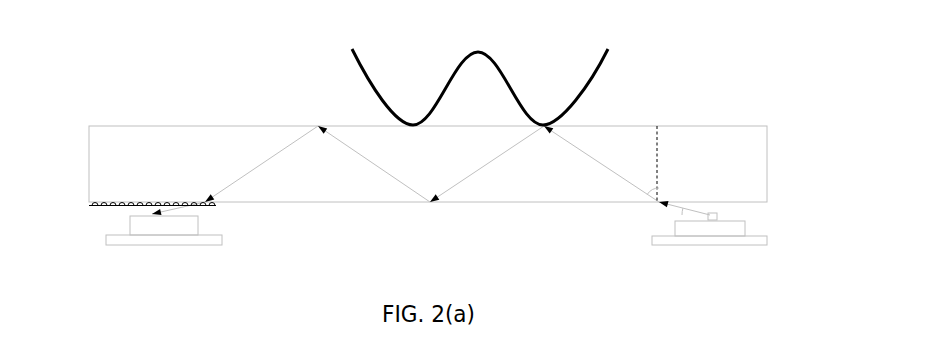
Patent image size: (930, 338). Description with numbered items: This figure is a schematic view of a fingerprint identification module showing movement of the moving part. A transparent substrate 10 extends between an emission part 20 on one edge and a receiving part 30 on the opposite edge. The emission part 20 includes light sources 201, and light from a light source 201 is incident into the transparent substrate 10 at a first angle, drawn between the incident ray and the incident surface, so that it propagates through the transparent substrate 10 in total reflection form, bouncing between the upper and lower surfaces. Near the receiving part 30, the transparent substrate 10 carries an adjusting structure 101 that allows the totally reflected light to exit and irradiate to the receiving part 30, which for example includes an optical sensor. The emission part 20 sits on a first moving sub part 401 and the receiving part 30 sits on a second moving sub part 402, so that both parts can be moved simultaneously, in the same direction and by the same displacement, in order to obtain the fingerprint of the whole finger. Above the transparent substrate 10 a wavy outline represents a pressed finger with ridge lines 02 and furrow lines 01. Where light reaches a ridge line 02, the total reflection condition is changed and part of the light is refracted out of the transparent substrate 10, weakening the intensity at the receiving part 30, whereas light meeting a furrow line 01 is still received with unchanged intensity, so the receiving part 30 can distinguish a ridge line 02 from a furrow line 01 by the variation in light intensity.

The furrow line 01 is at (482, 49).
The ridge line 02 is at (549, 124).
The transparent substrate 10 is at (705, 158).
The adjusting structure 101 is at (100, 206).
The emission part 20 is at (712, 230).
The light source 201 is at (717, 216).
The receiving part 30 is at (140, 222).
The first moving sub part 401 is at (738, 241).
The second moving sub part 402 is at (120, 240).